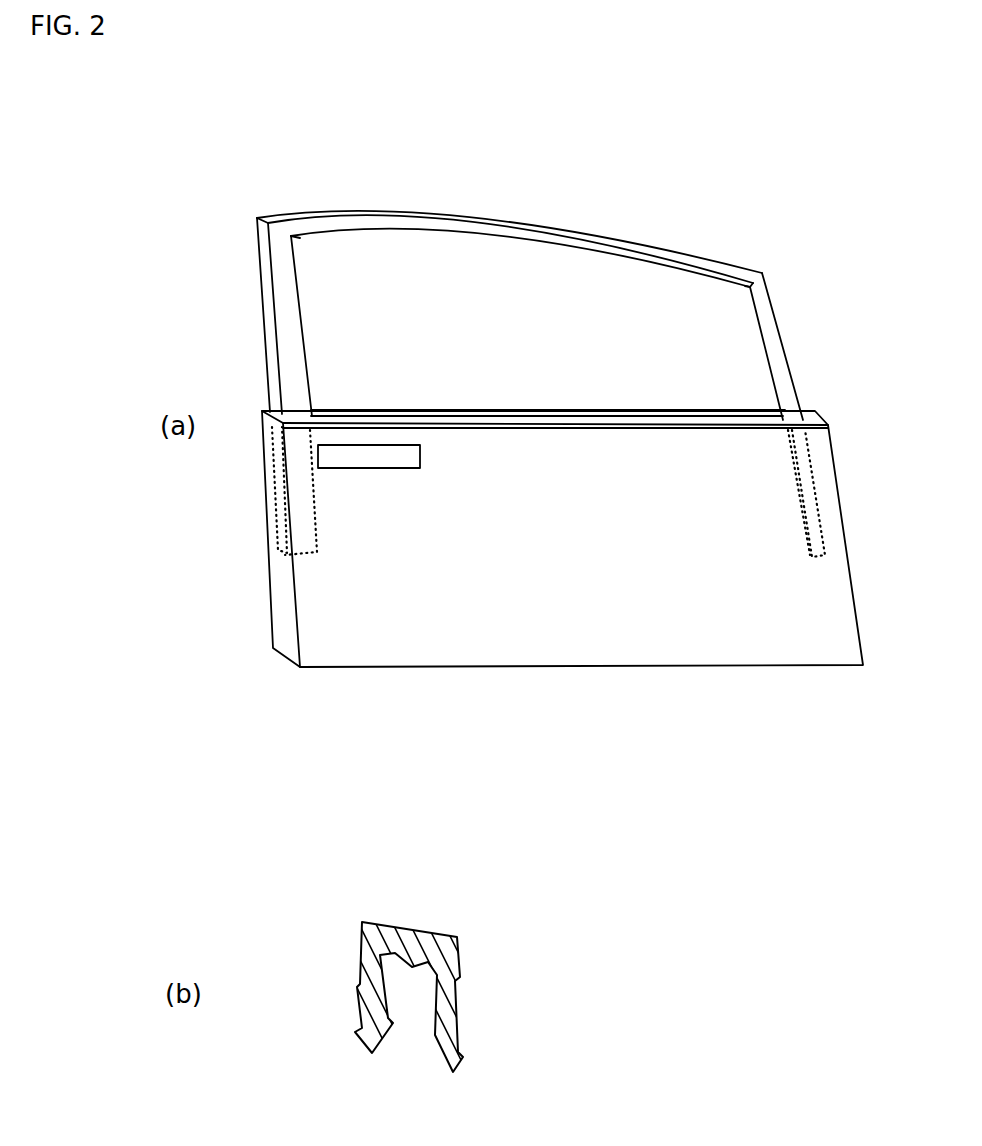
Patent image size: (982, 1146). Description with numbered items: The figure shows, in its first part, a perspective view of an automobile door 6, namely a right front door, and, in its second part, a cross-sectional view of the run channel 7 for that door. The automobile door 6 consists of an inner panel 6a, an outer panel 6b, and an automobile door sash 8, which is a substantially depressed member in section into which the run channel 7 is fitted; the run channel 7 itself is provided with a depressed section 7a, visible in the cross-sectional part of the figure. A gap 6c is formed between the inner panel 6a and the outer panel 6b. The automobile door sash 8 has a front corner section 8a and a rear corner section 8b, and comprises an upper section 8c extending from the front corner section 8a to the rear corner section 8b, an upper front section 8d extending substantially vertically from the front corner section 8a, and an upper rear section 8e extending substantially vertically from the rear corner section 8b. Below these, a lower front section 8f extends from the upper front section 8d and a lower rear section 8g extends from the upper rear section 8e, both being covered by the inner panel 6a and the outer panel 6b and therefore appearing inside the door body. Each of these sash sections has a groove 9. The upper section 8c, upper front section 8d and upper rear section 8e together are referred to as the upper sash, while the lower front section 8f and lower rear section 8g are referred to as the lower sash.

The automobile door 6 is at (562, 430).
The inner panel 6a is at (503, 417).
The outer panel 6b is at (590, 427).
The gap 6c is at (437, 420).
The run channel 7 is at (478, 932).
The depressed section 7a is at (408, 1020).
The automobile door sash 8 is at (541, 339).
The front corner section 8a is at (747, 290).
The rear corner section 8b is at (300, 243).
The upper section 8c is at (459, 228).
The upper front section 8d is at (770, 367).
The upper rear section 8e is at (305, 353).
The lower front section 8f is at (800, 497).
The lower rear section 8g is at (315, 522).
The groove 9 is at (386, 238).